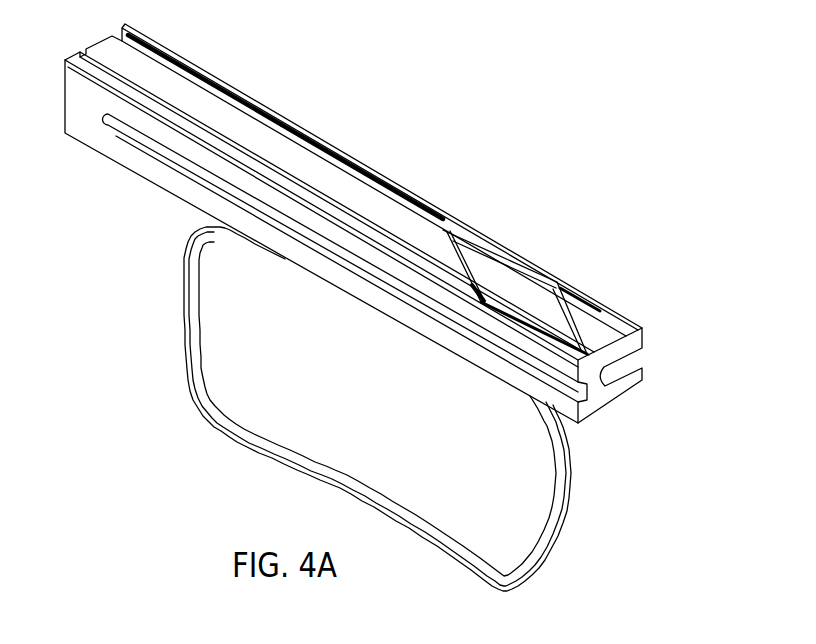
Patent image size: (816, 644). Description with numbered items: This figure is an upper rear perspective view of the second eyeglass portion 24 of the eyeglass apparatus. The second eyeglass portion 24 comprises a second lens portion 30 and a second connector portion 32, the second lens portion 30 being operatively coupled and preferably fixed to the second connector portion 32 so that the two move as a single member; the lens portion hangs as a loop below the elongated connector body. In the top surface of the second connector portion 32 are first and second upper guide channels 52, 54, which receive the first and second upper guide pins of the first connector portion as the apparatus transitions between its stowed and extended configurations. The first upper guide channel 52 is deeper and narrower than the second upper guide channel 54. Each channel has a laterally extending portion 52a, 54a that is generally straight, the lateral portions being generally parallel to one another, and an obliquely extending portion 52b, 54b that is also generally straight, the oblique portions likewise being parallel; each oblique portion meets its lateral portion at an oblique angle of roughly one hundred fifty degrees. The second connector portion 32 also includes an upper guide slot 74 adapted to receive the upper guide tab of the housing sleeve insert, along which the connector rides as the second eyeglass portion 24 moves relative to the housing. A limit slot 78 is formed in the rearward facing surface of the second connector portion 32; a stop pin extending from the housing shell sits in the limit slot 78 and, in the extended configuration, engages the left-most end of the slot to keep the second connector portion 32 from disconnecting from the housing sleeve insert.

The second eyeglass portion 24 is at (379, 86).
The second lens portion 30 is at (414, 541).
The second connector portion 32 is at (100, 156).
The first upper guide channel 52 is at (168, 64).
The laterally extending portion 52a is at (221, 89).
The obliquely extending portion 52b is at (479, 282).
The second upper guide channel 54 is at (533, 265).
The laterally extending portion 54a is at (551, 276).
The obliquely extending portion 54b is at (579, 322).
The upper guide slot 74 is at (88, 55).
The limit slot 78 is at (180, 164).